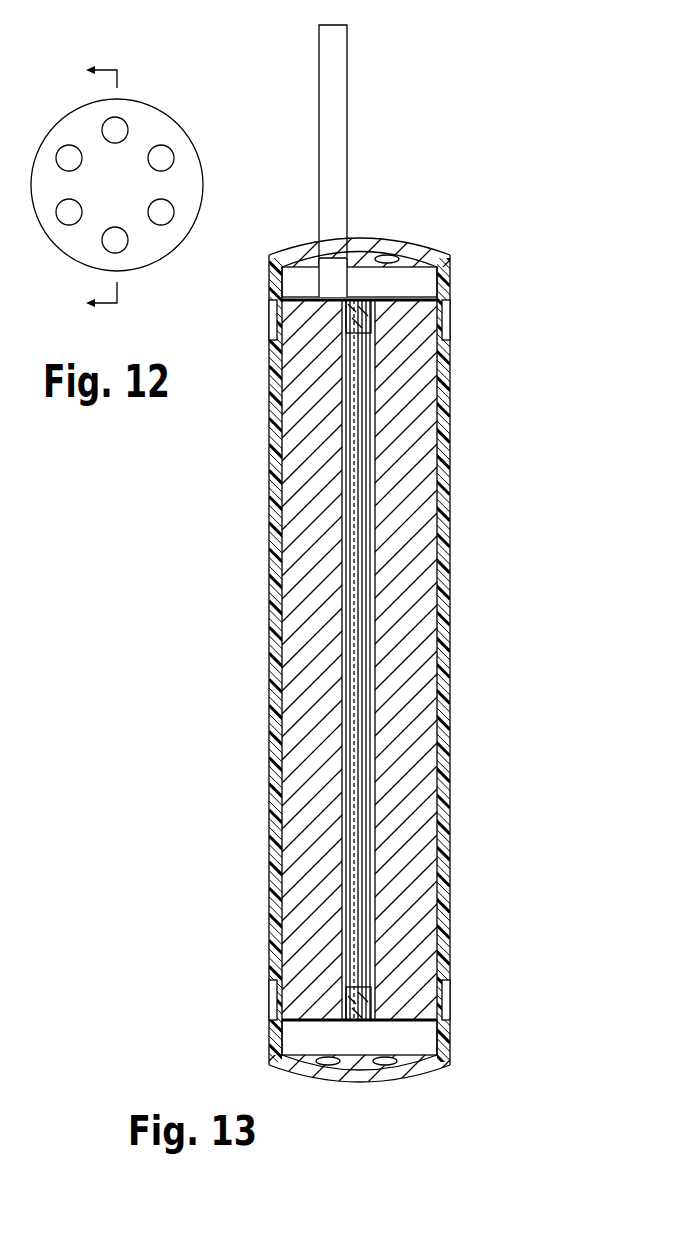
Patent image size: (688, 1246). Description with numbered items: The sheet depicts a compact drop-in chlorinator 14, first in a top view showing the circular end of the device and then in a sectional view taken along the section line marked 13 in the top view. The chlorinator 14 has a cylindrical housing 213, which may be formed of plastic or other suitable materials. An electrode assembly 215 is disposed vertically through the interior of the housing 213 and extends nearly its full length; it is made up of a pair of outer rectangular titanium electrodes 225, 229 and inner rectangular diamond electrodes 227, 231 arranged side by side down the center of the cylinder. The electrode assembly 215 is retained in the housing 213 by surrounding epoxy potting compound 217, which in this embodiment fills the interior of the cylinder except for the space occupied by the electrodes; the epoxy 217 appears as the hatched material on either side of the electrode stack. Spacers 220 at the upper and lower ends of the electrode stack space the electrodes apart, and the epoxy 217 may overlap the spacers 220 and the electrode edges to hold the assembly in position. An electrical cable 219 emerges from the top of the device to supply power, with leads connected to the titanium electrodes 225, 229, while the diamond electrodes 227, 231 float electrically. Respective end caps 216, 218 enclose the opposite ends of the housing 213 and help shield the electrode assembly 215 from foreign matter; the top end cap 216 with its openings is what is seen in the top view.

In FIG. 12, the section line 13- 13 is at (90, 186).
In FIG. 13, the chlorinator 14 is at (492, 436).
In FIG. 13, the cylindrical housing 213 is at (450, 533).
In FIG. 13, the electrode assembly 215 is at (380, 372).
In FIG. 12, the end cap 216 is at (150, 122).
In FIG. 13, the end cap 216 is at (368, 240).
In FIG. 13, the epoxy potting compound 217 is at (390, 751).
In FIG. 13, the end cap 218 is at (450, 1038).
In FIG. 13, the electrical cable 219 is at (340, 103).
In FIG. 13, the spacer 220 is at (360, 330).
In FIG. 13, the titanium electrode 225 is at (342, 558).
In FIG. 13, the diamond electrode 227 is at (357, 783).
In FIG. 13, the titanium electrode 229 is at (377, 622).
In FIG. 13, the diamond electrode 231 is at (365, 818).